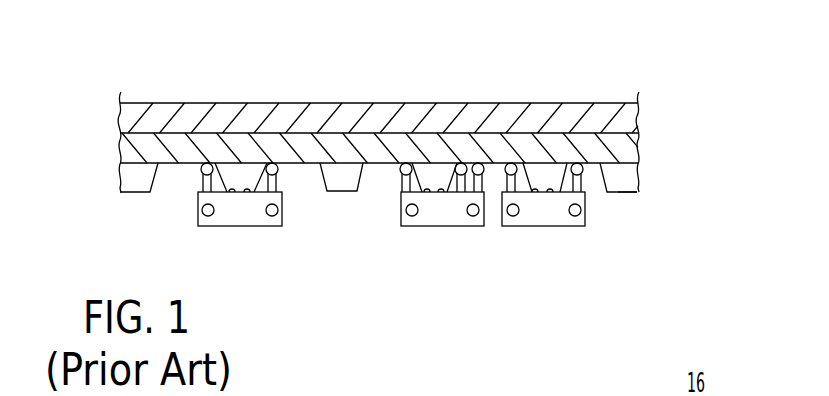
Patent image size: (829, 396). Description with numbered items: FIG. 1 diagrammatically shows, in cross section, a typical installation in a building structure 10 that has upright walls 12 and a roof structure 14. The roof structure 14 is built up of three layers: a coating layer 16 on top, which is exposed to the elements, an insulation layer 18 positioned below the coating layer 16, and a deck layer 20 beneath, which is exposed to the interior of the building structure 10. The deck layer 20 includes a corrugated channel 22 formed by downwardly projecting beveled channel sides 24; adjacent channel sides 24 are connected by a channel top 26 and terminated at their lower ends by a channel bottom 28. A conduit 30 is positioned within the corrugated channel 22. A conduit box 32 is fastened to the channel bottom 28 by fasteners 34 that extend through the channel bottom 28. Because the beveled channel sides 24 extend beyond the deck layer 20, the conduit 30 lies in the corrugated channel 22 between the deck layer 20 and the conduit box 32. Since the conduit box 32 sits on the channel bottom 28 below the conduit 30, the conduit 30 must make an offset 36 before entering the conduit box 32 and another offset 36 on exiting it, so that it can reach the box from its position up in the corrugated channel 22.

The building structure 10 is at (641, 36).
The upright walls 12 is at (639, 115).
The roof structure 14 is at (293, 83).
The coating layer 16 is at (410, 120).
The insulation layer 18 is at (120, 147).
The deck layer 20 is at (638, 163).
The corrugated channel 22 is at (320, 190).
The beveled channel sides 24 is at (600, 170).
The channel top 26 is at (197, 165).
The channel bottom 28 is at (633, 193).
The conduit 30 is at (202, 172).
The conduit box 32 is at (242, 218).
The fasteners 34 is at (562, 193).
The offset 36 is at (400, 184).